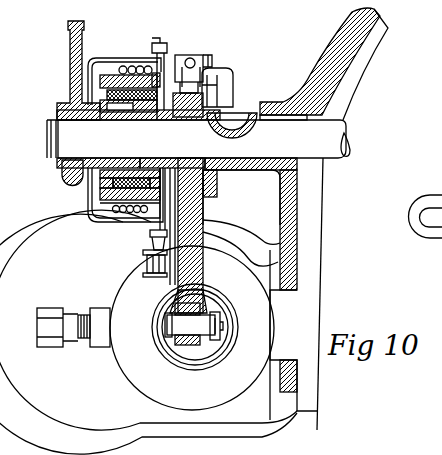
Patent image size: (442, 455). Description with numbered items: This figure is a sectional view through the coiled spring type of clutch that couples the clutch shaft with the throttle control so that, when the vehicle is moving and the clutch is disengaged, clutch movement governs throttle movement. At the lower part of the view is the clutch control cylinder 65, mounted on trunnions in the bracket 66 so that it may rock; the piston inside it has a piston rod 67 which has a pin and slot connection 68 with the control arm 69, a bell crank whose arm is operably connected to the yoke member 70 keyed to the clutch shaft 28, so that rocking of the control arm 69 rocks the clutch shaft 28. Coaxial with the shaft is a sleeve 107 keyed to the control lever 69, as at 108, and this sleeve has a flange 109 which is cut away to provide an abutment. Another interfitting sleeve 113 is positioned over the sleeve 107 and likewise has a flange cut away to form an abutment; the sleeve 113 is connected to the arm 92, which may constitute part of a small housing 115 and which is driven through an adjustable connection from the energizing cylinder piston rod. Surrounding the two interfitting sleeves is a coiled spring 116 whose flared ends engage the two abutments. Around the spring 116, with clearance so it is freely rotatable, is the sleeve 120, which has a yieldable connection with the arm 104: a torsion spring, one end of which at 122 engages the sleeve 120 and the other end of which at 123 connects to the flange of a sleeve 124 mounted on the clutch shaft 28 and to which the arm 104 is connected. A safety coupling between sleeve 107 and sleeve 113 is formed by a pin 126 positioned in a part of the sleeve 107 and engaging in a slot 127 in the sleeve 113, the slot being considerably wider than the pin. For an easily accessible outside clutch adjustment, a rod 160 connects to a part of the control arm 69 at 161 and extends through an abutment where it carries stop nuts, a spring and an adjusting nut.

The arm 104 is at (72, 50).
The sleeve 124 is at (63, 162).
The small housing 115 is at (103, 58).
The sleeve 120 is at (92, 80).
The coiled spring 116 is at (113, 77).
The pin 126 is at (126, 113).
The slot 127 is at (138, 117).
The end of torsion spring 122 is at (158, 62).
The rod 160 is at (177, 55).
The connection of rod to control arm 161 is at (212, 62).
The yoke member 70 is at (229, 82).
The clutch shaft 28 is at (342, 118).
The interfitting sleeve 113 is at (127, 160).
The sleeve 107 is at (146, 162).
The keyed connection 108 is at (173, 158).
The end of torsion spring 123 is at (99, 212).
The flange 109 is at (97, 183).
The control arm 69 is at (217, 220).
The arm 92 is at (168, 280).
The pin and slot connection 68 is at (196, 330).
The bracket 66 is at (78, 382).
The clutch control cylinder 65 is at (238, 383).
The piston rod 67 is at (441, 245).